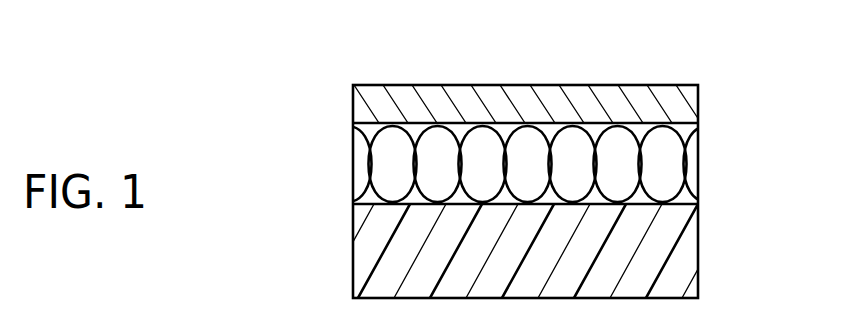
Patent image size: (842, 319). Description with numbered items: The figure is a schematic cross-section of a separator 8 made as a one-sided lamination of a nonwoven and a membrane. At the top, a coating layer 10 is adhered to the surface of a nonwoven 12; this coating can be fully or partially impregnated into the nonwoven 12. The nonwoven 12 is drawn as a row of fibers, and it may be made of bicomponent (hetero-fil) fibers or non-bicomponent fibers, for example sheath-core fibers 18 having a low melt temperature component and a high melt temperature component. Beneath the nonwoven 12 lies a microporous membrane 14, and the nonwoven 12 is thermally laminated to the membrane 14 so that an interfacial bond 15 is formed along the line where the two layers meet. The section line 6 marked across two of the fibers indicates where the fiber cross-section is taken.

The section line 6- 6 is at (613, 159).
The separator 8 is at (315, 177).
The coating layer 10 is at (698, 108).
The nonwoven 12 is at (698, 165).
The microporous membrane 14 is at (698, 262).
The interfacial bond 15 is at (698, 205).
The sheath-core fibers 18 is at (449, 123).